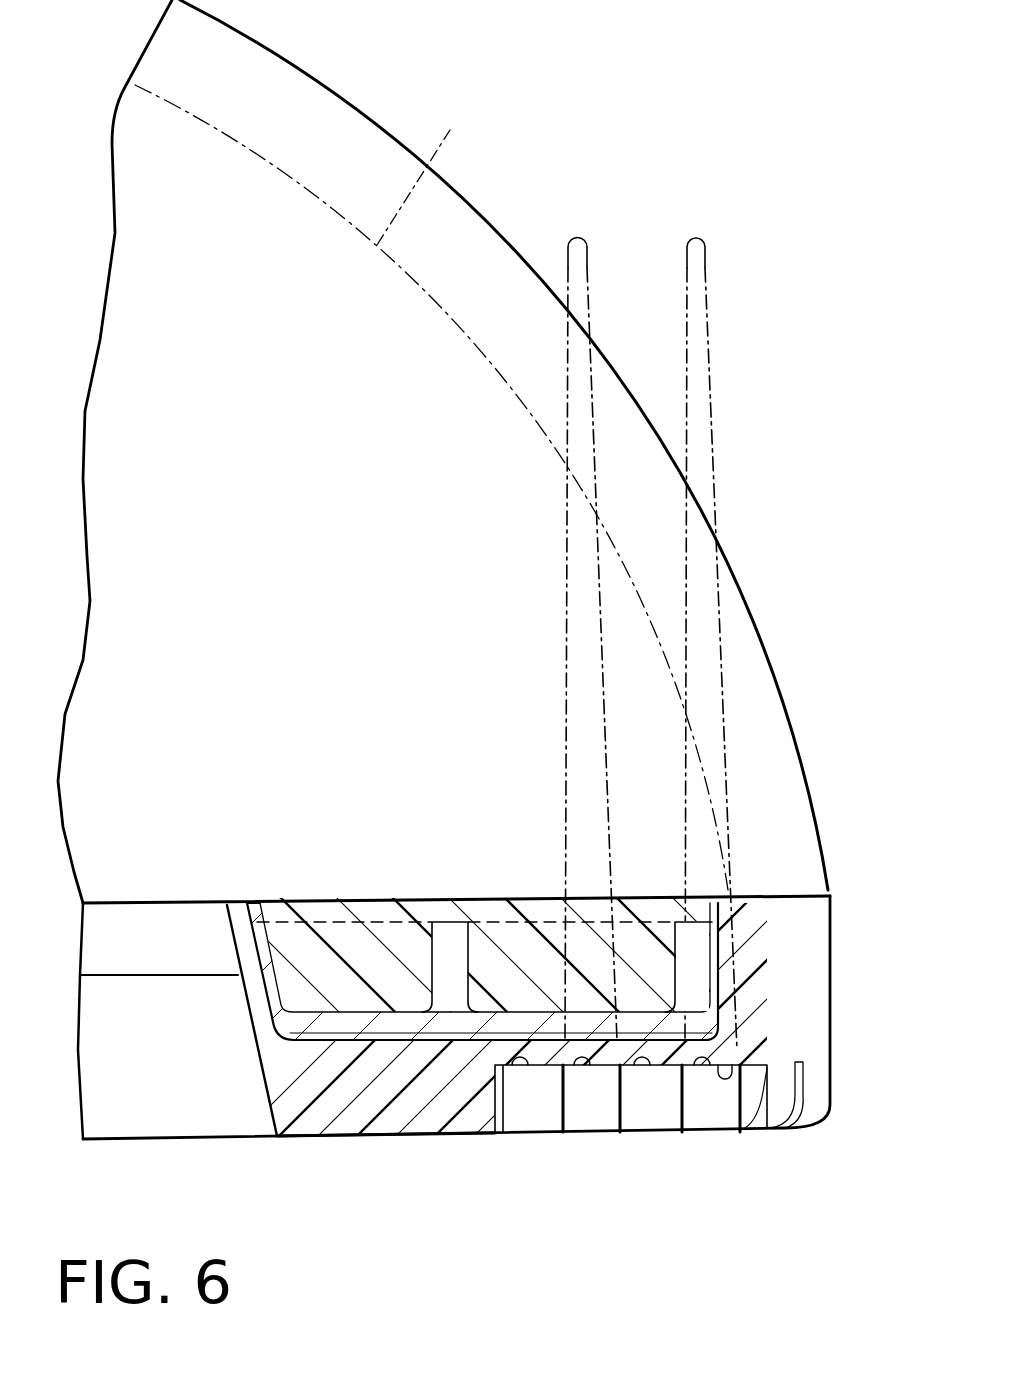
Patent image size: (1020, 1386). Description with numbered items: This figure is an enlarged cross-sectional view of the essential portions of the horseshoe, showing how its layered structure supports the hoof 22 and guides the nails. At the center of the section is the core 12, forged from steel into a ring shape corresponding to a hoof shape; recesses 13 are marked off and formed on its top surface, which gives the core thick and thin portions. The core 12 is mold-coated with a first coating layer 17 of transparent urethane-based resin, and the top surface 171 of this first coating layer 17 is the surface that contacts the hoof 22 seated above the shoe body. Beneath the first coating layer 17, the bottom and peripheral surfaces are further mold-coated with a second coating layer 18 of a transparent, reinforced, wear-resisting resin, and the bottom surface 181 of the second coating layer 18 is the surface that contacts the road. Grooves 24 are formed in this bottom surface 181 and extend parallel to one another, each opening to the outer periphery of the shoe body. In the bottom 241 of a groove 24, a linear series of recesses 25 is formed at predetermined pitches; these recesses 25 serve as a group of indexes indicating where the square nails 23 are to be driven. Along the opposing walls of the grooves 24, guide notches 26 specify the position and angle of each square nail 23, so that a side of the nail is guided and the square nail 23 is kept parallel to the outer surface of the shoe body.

The core 12 is at (292, 947).
The recesses 13 is at (428, 964).
The first coating layer 17 is at (372, 907).
The top surface of first coating layer 171 is at (327, 905).
The second coating layer 18 is at (332, 1128).
The bottom surface of second coating layer 181 is at (392, 1142).
The hoof 22 is at (395, 135).
The square nails 23 is at (590, 266).
The grooves 24 is at (758, 1088).
The bottom of groove 241 is at (737, 1058).
The recesses 25 is at (523, 1067).
The guide notches 26 is at (517, 1123).